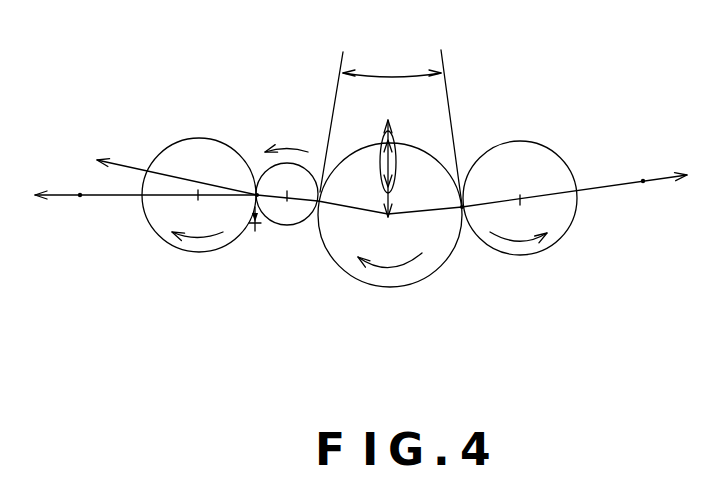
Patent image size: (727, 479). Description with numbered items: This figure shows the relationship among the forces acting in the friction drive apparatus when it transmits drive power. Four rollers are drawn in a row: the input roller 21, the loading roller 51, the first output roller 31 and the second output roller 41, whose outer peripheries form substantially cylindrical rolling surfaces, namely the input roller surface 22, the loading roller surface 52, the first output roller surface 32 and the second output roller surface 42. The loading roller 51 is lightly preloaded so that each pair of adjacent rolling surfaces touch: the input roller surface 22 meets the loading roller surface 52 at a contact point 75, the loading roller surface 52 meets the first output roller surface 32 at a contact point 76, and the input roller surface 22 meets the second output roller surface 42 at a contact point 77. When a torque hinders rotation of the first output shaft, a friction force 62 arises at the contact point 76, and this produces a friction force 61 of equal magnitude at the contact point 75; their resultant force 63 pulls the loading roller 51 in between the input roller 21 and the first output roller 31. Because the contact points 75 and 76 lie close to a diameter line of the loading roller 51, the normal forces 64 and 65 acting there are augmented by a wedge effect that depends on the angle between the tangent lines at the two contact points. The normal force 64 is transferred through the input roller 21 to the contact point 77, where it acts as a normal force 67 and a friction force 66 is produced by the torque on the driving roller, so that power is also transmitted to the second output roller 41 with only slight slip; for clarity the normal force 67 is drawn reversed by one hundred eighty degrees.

The input roller 21 is at (273, 212).
The input roller surface 22 is at (313, 205).
The first output roller 31 is at (540, 247).
The first output roller surface 32 is at (573, 232).
The second output roller 41 is at (162, 230).
The second output roller surface 42 is at (214, 253).
The loading roller 51 is at (417, 268).
The loading roller surface 52 is at (444, 267).
The friction force 61 is at (322, 165).
The friction force 62 is at (388, 213).
The resultant force 63 is at (388, 213).
The normal force 64 is at (138, 168).
The normal force 65 is at (643, 181).
The friction force 66 is at (263, 232).
The normal force 67 is at (80, 196).
The contact point 75 is at (368, 287).
The contact point 76 is at (465, 212).
The contact point 77 is at (255, 231).